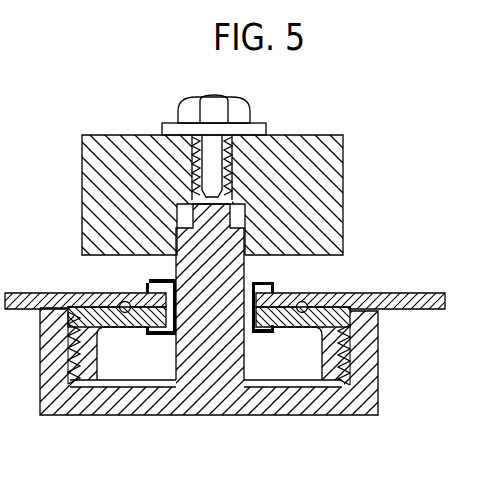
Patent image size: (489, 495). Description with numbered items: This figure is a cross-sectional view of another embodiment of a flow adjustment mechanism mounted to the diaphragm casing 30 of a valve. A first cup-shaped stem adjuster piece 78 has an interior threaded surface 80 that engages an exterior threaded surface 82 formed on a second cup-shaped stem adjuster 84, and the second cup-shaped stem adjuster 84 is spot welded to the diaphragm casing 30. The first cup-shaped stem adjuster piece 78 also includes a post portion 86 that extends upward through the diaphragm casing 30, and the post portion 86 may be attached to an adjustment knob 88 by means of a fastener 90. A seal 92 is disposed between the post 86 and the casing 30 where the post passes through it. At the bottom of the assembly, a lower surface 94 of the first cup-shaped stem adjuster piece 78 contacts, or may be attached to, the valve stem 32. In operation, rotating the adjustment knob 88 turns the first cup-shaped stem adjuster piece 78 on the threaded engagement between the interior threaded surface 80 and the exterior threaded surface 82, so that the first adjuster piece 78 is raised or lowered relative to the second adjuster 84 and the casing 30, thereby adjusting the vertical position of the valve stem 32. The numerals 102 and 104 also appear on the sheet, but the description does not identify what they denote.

The diaphragm casing 30 is at (440, 292).
The first cup-shaped stem adjuster piece 78 is at (378, 382).
The interior threaded surface 80 is at (347, 336).
The exterior threaded surface 82 is at (328, 328).
The second cup-shaped stem adjuster 84 is at (327, 353).
The post portion 86 is at (175, 268).
The adjustment knob 88 is at (348, 192).
The fastener 90 is at (240, 110).
The seal 92 is at (250, 264).
The lower surface 94 is at (140, 415).
The element 102 is at (16, 31).
The element 104 is at (0, 71).
The valve stem 32 is at (0, 116).